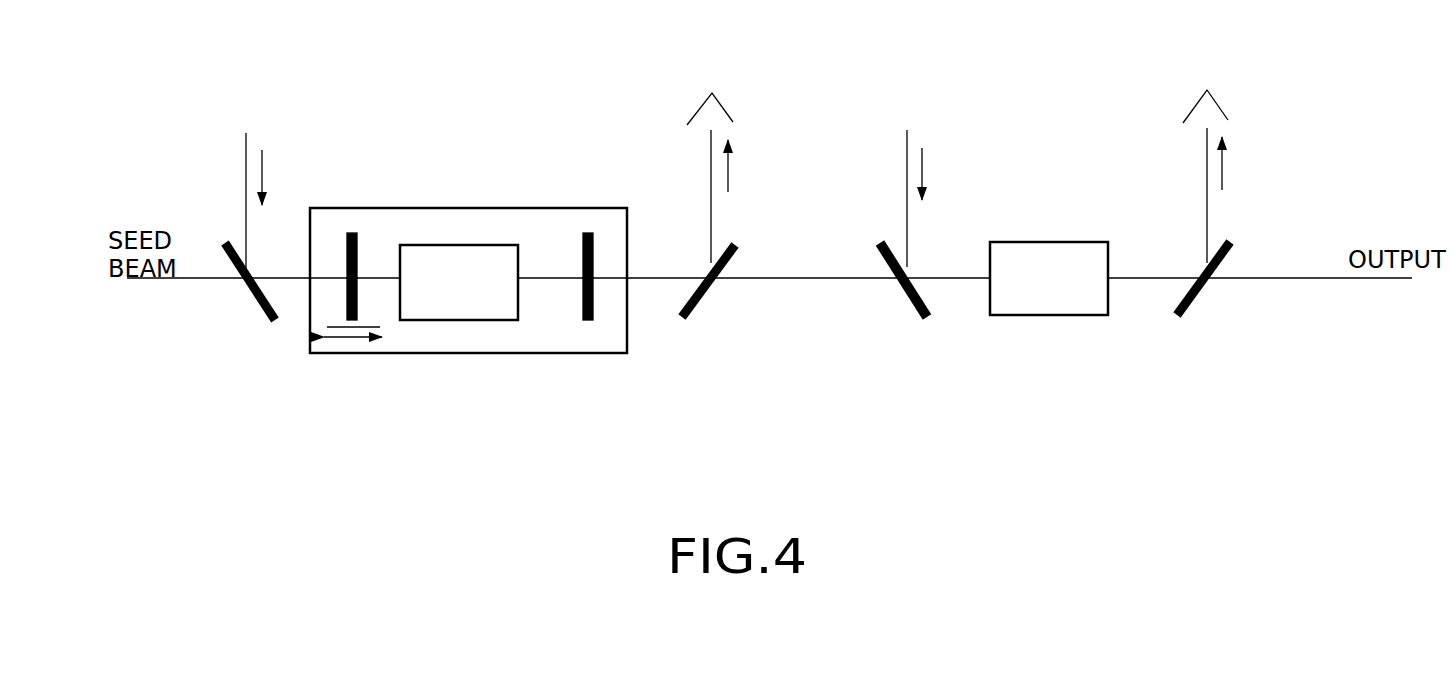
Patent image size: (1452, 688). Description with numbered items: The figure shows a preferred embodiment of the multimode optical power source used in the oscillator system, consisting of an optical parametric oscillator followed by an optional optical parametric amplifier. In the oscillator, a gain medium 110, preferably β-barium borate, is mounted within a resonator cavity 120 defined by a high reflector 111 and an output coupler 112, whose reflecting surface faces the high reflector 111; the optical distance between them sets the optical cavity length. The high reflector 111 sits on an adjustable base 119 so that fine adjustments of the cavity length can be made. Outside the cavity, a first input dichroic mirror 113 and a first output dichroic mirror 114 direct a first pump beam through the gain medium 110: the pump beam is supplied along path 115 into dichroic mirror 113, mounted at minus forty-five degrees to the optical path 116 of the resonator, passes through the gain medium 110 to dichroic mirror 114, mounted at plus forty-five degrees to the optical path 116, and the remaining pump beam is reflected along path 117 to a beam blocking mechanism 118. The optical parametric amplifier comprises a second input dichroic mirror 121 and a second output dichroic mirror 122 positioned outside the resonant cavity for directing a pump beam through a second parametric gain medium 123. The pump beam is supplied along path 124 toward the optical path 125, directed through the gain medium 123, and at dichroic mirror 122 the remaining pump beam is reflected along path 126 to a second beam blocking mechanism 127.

The gain medium 110 is at (430, 245).
The high reflector 111 is at (353, 247).
The output coupler 112 is at (583, 263).
The first input dichroic mirror 113 is at (253, 305).
The first output dichroic mirror 114 is at (700, 300).
The pump beam path 115 is at (225, 203).
The optical path of the resonator 116 is at (321, 277).
The reflected pump beam path 117 is at (711, 202).
The beam blocking mechanism 118 is at (722, 105).
The adjustable base 119 is at (333, 325).
The resonator cavity 120 is at (487, 208).
The second input dichroic mirror 121 is at (910, 315).
The second output dichroic mirror 122 is at (1192, 308).
The second parametric gain medium 123 is at (1048, 317).
The second pump beam path 124 is at (927, 194).
The OPA optical path 125 is at (947, 275).
The second reflected pump beam path 126 is at (1207, 202).
The second beam blocking mechanism 127 is at (1192, 102).